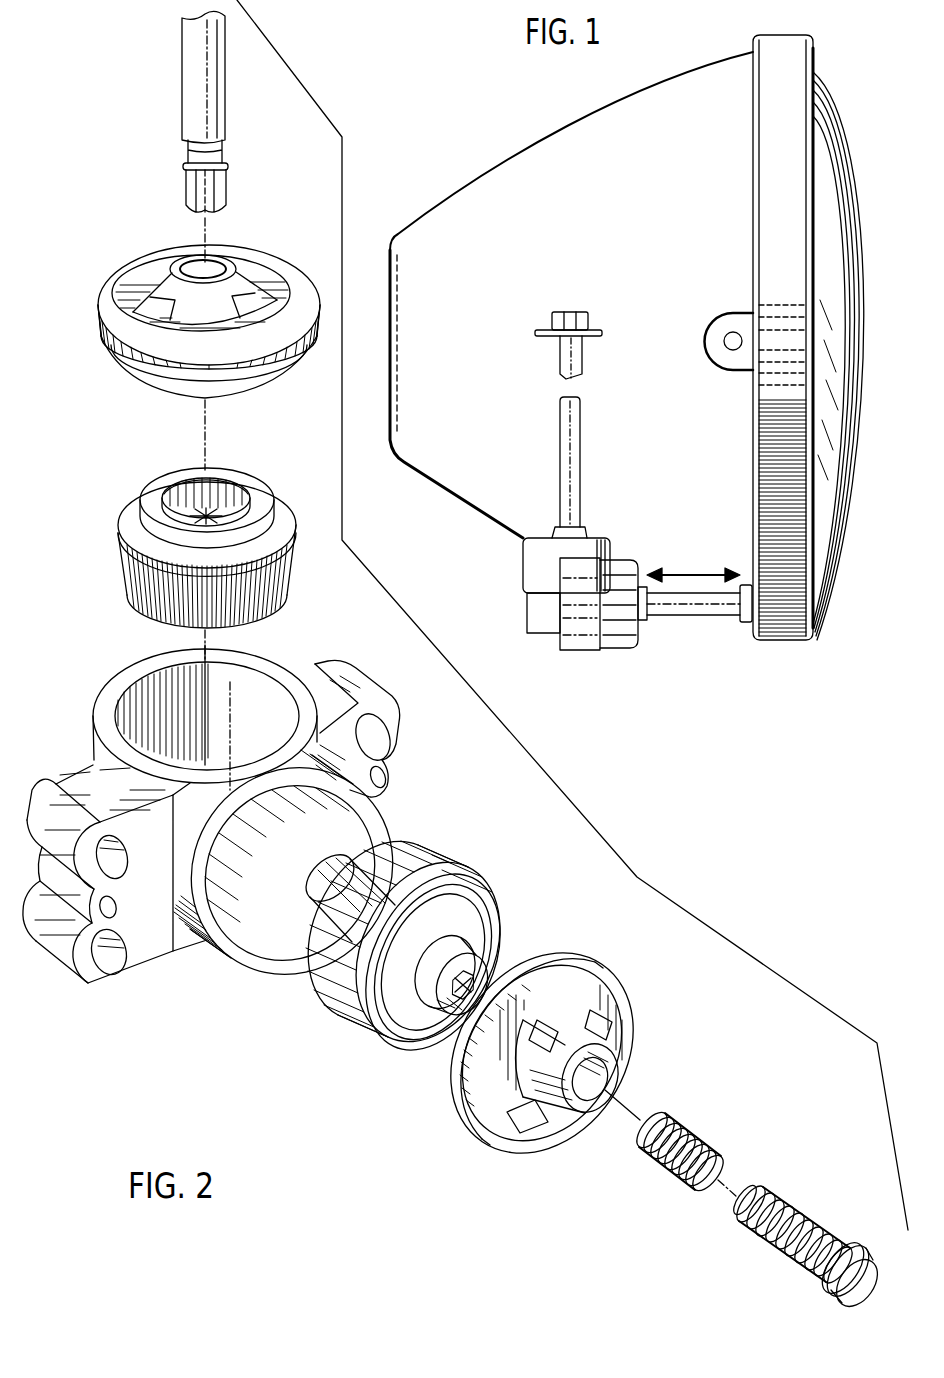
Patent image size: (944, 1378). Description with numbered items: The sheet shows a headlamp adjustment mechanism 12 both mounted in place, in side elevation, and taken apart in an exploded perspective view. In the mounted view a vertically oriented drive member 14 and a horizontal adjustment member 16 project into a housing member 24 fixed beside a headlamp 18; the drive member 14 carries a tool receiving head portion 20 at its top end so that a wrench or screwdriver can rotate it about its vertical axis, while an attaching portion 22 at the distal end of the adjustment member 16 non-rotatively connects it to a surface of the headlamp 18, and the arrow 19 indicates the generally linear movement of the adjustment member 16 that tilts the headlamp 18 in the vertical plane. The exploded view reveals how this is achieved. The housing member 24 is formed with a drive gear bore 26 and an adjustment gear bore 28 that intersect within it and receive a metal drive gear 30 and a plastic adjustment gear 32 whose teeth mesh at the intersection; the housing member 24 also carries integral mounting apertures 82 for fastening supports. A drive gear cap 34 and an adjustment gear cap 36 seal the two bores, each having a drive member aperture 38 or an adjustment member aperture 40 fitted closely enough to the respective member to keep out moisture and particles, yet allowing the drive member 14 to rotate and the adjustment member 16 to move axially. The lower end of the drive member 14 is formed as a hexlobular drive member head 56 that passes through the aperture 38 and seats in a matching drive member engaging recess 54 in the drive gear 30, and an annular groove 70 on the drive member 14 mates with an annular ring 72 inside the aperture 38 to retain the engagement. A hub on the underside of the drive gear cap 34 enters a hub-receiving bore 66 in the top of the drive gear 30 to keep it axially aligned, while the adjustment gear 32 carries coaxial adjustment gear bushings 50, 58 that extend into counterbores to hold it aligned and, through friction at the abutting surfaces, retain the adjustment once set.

In FIG. 1, the adjustment mechanism 12 is at (618, 621).
In FIG. 1, the drive member 14 is at (562, 444).
In FIG. 2, the drive member 14 is at (196, 80).
In FIG. 1, the adjustment member 16 is at (712, 605).
In FIG. 2, the adjustment member 16 is at (808, 1241).
In FIG. 1, the headlamp 18 is at (582, 128).
In FIG. 1, the arrow 19 is at (688, 573).
In FIG. 1, the tool receiving head portion 20 is at (559, 312).
In FIG. 1, the attaching portion 22 is at (744, 624).
In FIG. 2, the attaching portion 22 is at (828, 1292).
In FIG. 1, the housing member 24 is at (540, 612).
In FIG. 2, the housing member 24 is at (218, 846).
In FIG. 2, the drive gear bore 26 is at (200, 718).
In FIG. 2, the adjustment gear bore 28 is at (277, 872).
In FIG. 2, the drive gear 30 is at (169, 534).
In FIG. 2, the adjustment gear 32 is at (406, 957).
In FIG. 1, the drive gear cap 34 is at (530, 538).
In FIG. 2, the drive gear cap 34 is at (178, 311).
In FIG. 1, the adjustment gear cap 36 is at (638, 650).
In FIG. 2, the adjustment gear cap 36 is at (541, 1051).
In FIG. 2, the drive member aperture 38 is at (200, 250).
In FIG. 2, the adjustment member aperture 40 is at (607, 1090).
In FIG. 2, the adjustment gear bushing 50 is at (352, 868).
In FIG. 2, the drive member engaging recess 54 is at (170, 491).
In FIG. 2, the drive member head 56 is at (193, 183).
In FIG. 2, the adjustment gear bushing 58 is at (450, 996).
In FIG. 2, the hub-receiving bore 66 is at (244, 498).
In FIG. 2, the annular groove 70 is at (195, 152).
In FIG. 2, the annular ring 72 is at (487, 1005).
In FIG. 2, the mounting apertures 82 is at (103, 963).